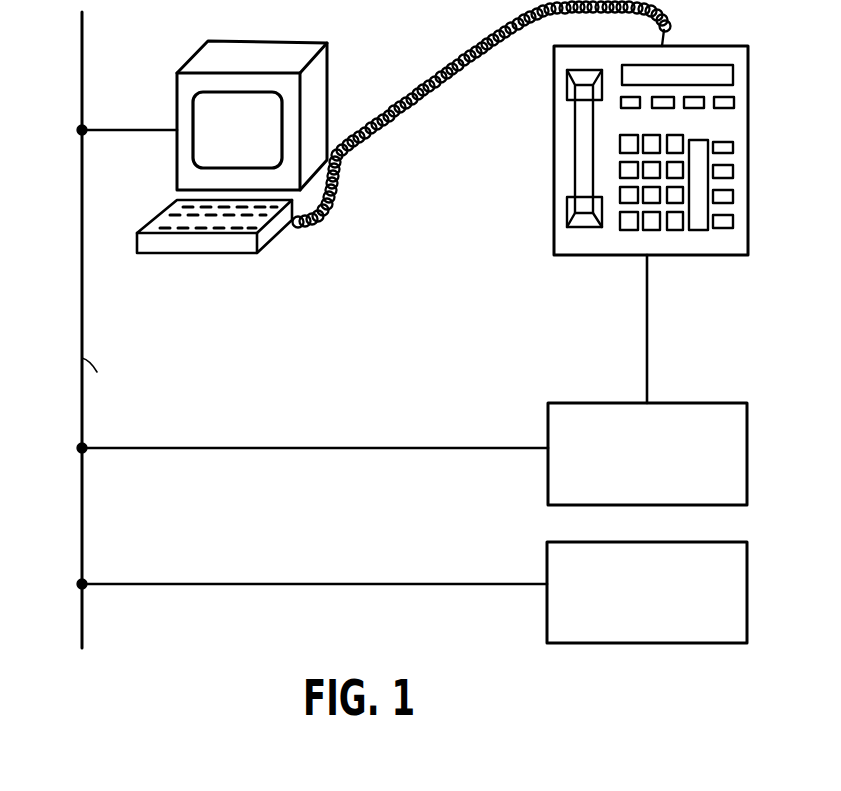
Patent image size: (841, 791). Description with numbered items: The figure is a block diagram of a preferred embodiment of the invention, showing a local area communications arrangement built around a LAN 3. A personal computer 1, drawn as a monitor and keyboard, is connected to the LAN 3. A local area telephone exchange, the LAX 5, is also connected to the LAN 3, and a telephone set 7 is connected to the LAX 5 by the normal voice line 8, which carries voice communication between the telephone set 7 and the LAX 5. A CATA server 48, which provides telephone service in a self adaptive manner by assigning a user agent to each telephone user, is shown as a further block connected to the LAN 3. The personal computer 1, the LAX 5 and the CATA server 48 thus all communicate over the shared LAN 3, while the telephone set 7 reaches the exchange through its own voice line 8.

The personal computer 1 is at (176, 87).
The LAN 3 is at (82, 244).
The local area telephone exchange (LAX) 5 is at (548, 423).
The telephone set 7 is at (598, 255).
The voice line 8 is at (649, 323).
The CATA server 48 is at (546, 562).